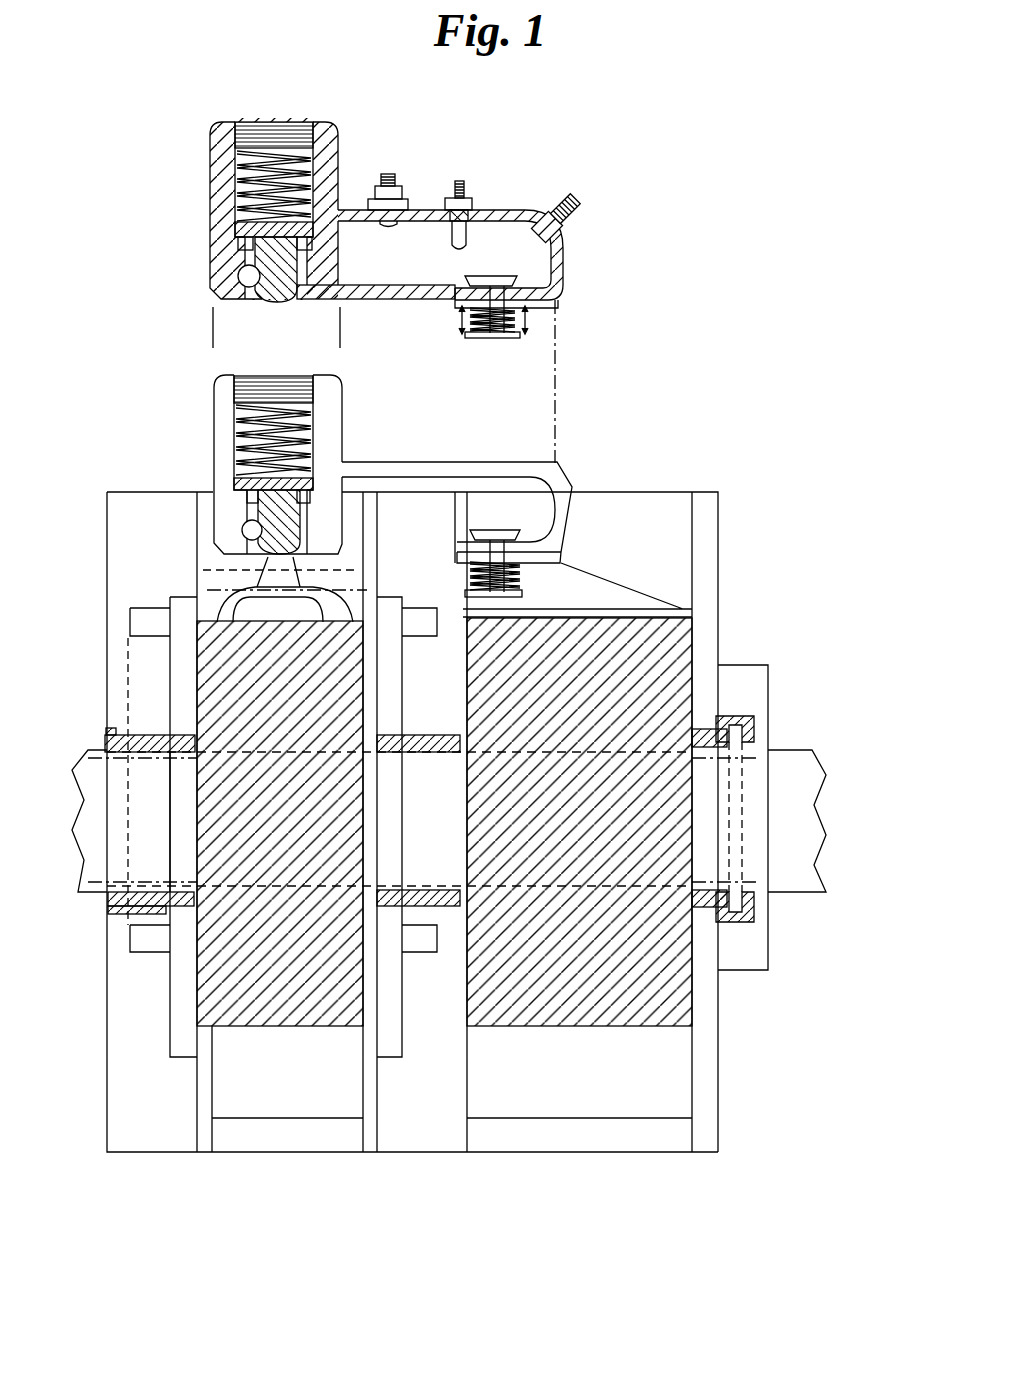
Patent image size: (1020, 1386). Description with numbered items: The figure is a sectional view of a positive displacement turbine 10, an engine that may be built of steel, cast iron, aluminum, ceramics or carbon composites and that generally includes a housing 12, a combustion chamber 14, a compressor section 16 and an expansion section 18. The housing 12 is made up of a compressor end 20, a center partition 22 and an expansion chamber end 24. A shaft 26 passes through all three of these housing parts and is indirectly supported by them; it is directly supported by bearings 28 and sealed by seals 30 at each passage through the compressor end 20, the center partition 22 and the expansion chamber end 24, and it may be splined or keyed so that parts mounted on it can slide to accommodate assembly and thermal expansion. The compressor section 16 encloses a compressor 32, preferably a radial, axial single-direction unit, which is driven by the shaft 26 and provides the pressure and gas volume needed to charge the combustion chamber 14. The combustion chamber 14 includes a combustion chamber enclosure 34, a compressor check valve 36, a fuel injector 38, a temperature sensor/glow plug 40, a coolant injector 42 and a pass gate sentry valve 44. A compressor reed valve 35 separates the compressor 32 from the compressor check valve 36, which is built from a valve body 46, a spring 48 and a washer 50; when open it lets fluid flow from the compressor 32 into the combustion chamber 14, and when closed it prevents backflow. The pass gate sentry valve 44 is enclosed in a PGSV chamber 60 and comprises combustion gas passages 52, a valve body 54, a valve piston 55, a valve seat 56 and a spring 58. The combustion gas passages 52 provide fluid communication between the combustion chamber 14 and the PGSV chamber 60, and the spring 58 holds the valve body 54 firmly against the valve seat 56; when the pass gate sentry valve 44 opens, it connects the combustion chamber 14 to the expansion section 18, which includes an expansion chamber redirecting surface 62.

The positive displacement turbine 10 is at (697, 418).
The housing 12 is at (715, 492).
The combustion chamber 14 is at (538, 208).
The compressor section 16 is at (603, 1154).
The expansion section 18 is at (284, 1154).
The compressor end 20 is at (720, 1052).
The center partition 22 is at (423, 1152).
The expansion chamber end 24 is at (197, 1110).
The shaft 26 is at (828, 785).
The bearings 28 is at (132, 910).
The seals 30 is at (123, 737).
The compressor 32 is at (673, 998).
The combustion chamber enclosure 34 is at (517, 462).
The compressor reed valve 35 is at (580, 610).
The compressor check valve 36 is at (470, 543).
The fuel injector 38 is at (590, 200).
The temperature sensor/glow plug 40 is at (468, 190).
The coolant injector 42 is at (402, 186).
The pass gate sentry valve 44 is at (320, 156).
The valve body 46 is at (556, 266).
The spring 48 is at (528, 320).
The washer 50 is at (510, 336).
The combustion gas passages 52 is at (245, 247).
The valve body 54 is at (262, 262).
The valve piston 55 is at (238, 233).
The valve seat 56 is at (262, 296).
The spring 58 is at (237, 205).
The PGSV chamber 60 is at (236, 175).
The expansion chamber redirecting surface 62 is at (250, 600).